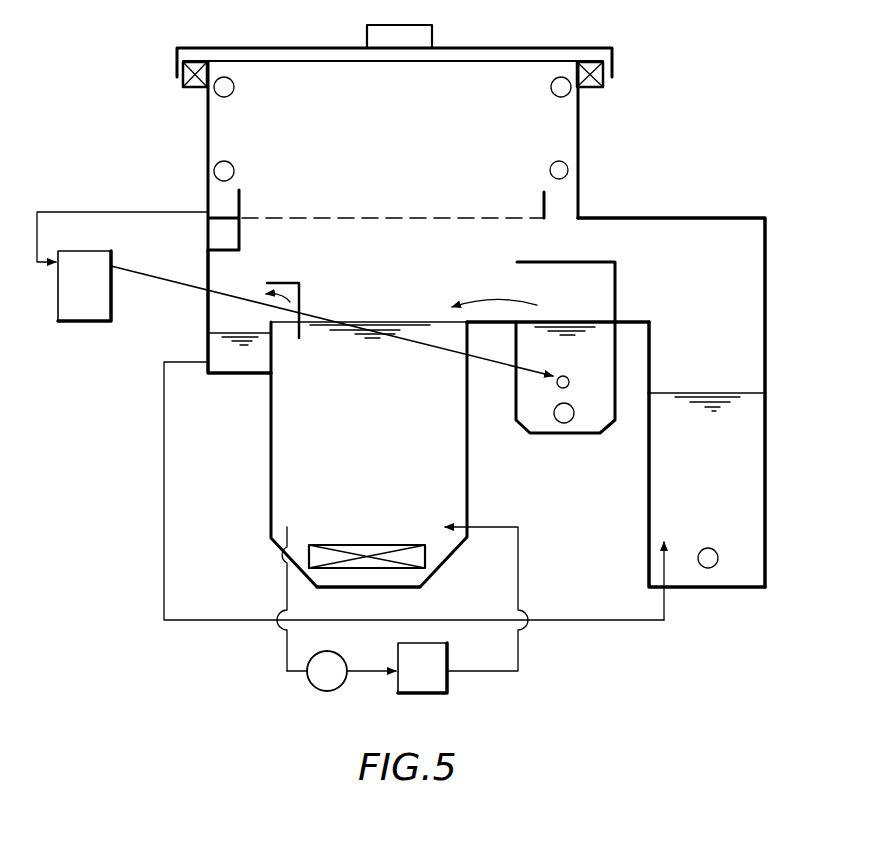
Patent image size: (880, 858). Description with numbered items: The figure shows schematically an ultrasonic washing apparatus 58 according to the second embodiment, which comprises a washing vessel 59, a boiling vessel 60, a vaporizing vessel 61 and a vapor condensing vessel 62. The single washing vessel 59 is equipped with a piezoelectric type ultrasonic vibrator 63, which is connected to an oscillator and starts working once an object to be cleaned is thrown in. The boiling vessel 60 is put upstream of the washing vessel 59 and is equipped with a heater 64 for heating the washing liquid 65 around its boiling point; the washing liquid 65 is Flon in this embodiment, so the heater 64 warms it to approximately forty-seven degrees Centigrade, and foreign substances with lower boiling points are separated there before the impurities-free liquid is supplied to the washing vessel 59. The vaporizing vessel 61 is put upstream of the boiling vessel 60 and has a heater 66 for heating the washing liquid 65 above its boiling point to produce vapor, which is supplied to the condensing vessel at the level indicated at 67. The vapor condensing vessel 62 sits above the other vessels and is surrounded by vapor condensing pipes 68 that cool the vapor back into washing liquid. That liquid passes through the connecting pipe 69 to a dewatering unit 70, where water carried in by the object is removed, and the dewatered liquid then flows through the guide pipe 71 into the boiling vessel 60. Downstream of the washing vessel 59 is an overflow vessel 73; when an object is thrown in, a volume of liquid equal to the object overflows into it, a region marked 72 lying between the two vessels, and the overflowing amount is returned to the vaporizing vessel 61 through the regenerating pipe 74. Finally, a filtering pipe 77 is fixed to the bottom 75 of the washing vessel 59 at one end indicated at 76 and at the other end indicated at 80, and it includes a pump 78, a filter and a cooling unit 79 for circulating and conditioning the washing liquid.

The ultrasonic washing apparatus 58 is at (150, 76).
The washing vessel 59 is at (271, 455).
The boiling vessel 60 is at (578, 437).
The vaporizing vessel 61 is at (649, 515).
The vapor condensing vessel 62 is at (579, 140).
The piezoelectric type ultrasonic vibrator 63 is at (385, 545).
The heater 64 is at (557, 424).
The washing liquid 65 is at (384, 321).
The heater 66 is at (712, 568).
The vapor supply level 67 is at (598, 228).
The vapor condensing pipes 68 is at (211, 97).
The connecting pipe 69 is at (113, 211).
The dewatering unit 70 is at (90, 322).
The guide pipe 71 is at (145, 279).
The weir 72 is at (268, 340).
The overflow vessel 73 is at (212, 376).
The regenerating pipe 74 is at (164, 512).
The bottom 75 is at (400, 590).
The filtering pipe end 76 is at (287, 592).
The filtering pipe 77 is at (287, 662).
The pump 78 is at (313, 688).
The cooling unit 79 is at (450, 688).
The filtering pipe end 80 is at (518, 578).